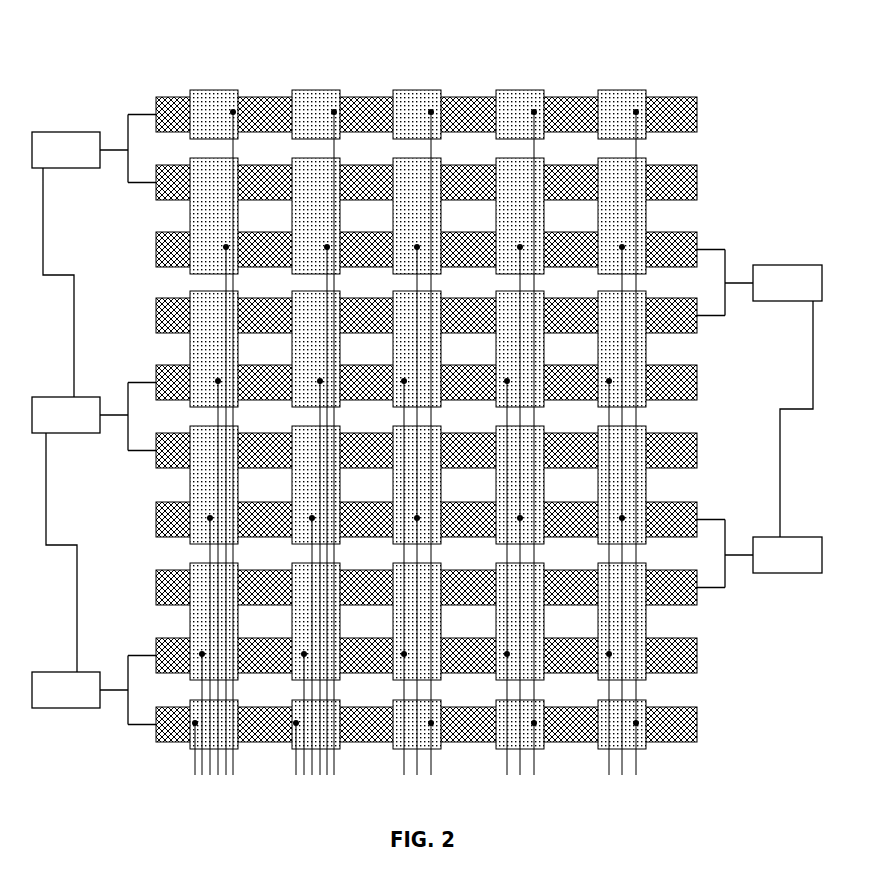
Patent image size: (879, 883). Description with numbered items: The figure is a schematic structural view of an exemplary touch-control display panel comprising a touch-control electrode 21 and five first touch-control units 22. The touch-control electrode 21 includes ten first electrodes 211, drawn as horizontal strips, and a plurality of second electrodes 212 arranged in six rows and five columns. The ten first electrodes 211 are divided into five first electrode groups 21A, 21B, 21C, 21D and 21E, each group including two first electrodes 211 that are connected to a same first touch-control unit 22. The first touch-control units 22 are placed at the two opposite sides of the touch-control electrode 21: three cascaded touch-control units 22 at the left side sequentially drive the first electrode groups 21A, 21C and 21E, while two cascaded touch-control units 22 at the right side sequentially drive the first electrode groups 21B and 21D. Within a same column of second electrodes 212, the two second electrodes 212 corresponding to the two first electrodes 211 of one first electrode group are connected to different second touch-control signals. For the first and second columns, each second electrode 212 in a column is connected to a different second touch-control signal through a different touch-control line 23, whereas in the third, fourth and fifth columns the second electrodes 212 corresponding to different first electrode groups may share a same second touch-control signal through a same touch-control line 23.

The touch-control electrode 21 is at (232, 63).
The first electrode 211 is at (377, 103).
The second electrode 212 is at (522, 107).
The first electrode group 21A is at (474, 118).
The first electrode group 21B is at (152, 233).
The first electrode group 21C is at (700, 363).
The first electrode group 21D is at (152, 507).
The first electrode group 21E is at (708, 635).
The first touch-control unit 22 is at (62, 145).
The touch-control line 23 is at (637, 765).